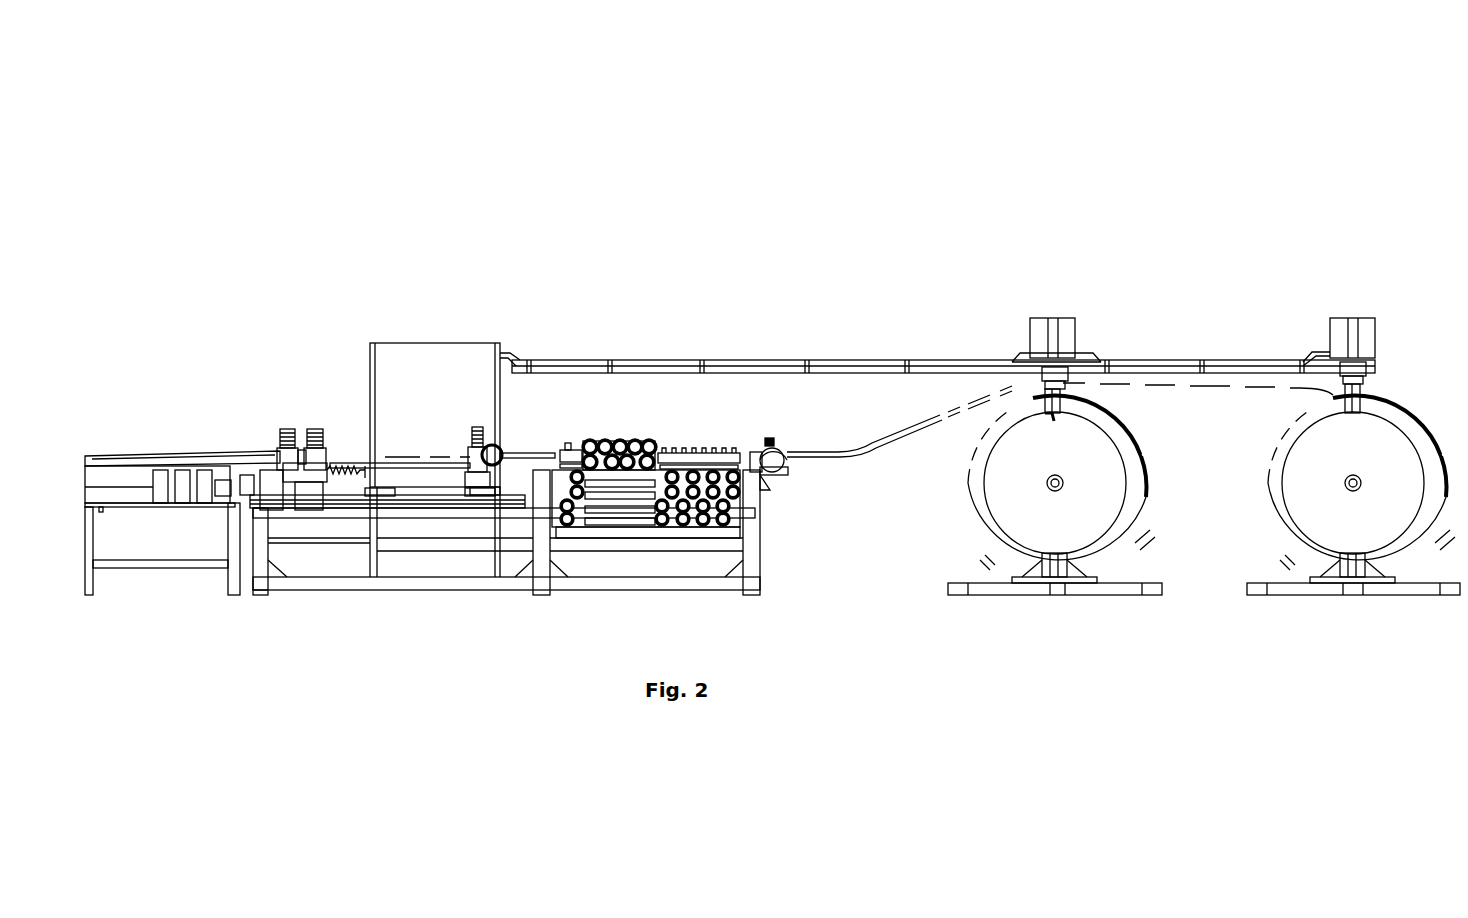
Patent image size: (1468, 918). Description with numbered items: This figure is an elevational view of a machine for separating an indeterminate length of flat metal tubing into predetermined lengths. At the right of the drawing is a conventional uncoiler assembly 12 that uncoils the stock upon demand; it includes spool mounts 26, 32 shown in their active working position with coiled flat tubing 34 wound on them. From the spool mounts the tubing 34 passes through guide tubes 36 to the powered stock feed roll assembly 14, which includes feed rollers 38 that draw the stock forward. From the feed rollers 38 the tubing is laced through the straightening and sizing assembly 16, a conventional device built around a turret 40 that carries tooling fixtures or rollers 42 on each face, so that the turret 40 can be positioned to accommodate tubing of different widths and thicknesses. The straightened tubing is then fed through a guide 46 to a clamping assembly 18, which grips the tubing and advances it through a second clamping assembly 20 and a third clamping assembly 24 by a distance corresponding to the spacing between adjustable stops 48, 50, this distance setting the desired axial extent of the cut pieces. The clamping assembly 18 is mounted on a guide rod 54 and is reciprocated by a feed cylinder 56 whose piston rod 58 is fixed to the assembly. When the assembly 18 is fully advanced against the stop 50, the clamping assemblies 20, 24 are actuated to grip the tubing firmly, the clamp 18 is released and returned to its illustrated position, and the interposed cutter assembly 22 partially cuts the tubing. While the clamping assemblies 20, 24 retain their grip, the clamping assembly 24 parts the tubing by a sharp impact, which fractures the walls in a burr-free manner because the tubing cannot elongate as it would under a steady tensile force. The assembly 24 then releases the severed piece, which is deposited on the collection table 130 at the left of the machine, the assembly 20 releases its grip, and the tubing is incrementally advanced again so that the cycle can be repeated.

The uncoiler assembly 12 is at (1152, 530).
The stock feed roll assembly 14 is at (769, 437).
The straightening and sizing assembly 16 is at (620, 435).
The clamping assembly 18 is at (478, 425).
The clamping assembly 20 is at (318, 425).
The cutter assembly 22 is at (300, 437).
The clamping assembly 24 is at (278, 424).
The spool mount 26 is at (1000, 448).
The spool mount 32 is at (1295, 462).
The coiled flat tubing 34 is at (1302, 392).
The guide tubes 36 is at (855, 447).
The feed rollers 38 is at (765, 440).
The turret 40 is at (620, 540).
The tooling fixtures or rollers 42 is at (578, 446).
The guide 46 is at (530, 452).
The adjustable stop 48 is at (490, 478).
The adjustable stop 50 is at (363, 473).
The guide rod 54 is at (350, 490).
The feed cylinder 56 is at (200, 503).
The piston rod 58 is at (415, 500).
The collection table 130 is at (160, 455).